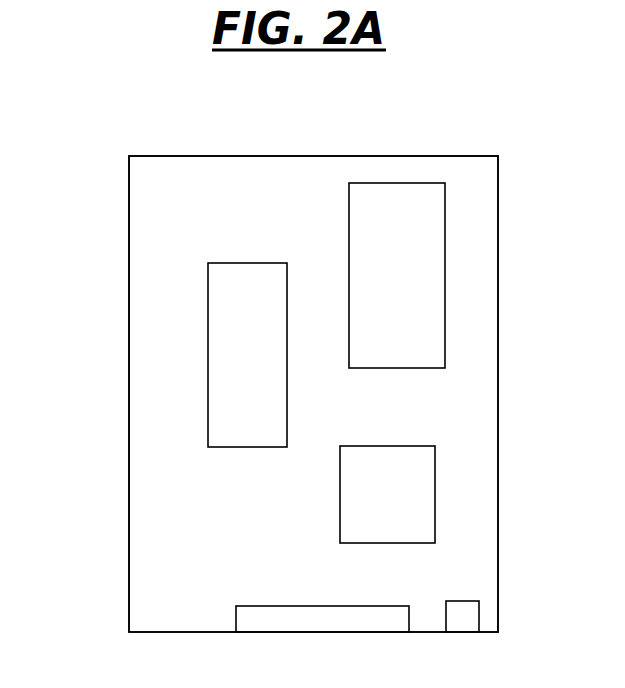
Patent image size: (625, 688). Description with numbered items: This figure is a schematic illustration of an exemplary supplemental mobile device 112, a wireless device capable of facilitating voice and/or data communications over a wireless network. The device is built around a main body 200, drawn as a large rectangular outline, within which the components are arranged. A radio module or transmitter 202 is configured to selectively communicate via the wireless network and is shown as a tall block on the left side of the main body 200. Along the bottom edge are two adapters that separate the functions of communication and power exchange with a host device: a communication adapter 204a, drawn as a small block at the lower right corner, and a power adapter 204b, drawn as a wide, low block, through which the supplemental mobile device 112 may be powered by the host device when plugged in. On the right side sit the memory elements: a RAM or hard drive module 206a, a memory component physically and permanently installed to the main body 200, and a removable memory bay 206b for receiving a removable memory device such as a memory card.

The supplemental mobile device 112 is at (91, 120).
The main body 200 is at (484, 226).
The radio module or transmitter 202 is at (247, 355).
The communication adapter 204a is at (479, 601).
The power adapter 204b is at (253, 606).
The RAM or hard drive module 206a is at (387, 494).
The removable memory bay 206b is at (397, 275).